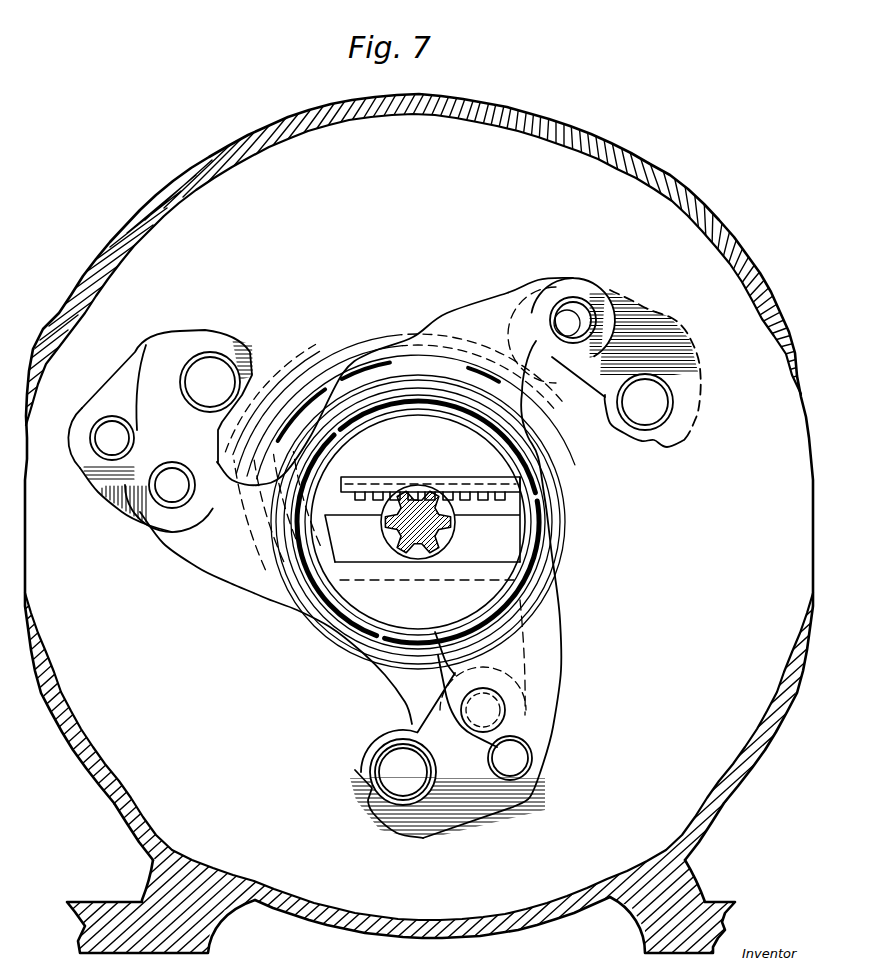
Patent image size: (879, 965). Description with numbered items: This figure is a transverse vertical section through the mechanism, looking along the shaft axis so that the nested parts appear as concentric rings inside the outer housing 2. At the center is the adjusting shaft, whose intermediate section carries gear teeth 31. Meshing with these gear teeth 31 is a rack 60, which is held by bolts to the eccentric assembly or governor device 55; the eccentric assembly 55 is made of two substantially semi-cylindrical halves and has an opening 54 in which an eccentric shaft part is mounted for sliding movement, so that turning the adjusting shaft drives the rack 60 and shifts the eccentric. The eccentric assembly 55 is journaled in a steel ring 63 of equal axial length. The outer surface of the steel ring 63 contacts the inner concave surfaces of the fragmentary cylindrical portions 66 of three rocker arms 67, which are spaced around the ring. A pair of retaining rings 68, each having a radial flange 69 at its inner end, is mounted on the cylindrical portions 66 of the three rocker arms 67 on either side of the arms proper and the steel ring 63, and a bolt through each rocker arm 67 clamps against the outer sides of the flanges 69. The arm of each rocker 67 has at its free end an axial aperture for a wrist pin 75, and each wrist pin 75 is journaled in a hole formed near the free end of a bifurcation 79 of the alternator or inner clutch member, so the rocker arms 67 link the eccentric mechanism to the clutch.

The housing casing 2 is at (688, 192).
The gear teeth 31 is at (418, 535).
The opening 54 is at (340, 562).
The eccentric assembly 55 is at (355, 580).
The rack 60 is at (338, 514).
The steel ring 63 is at (336, 380).
The fragmentary cylindrical portion 66 is at (541, 500).
The rocker arm 67 is at (520, 383).
The retaining ring 68 is at (312, 362).
The radial flange 69 is at (270, 372).
The wrist pin 75 is at (103, 433).
The bifurcation 79 is at (130, 353).